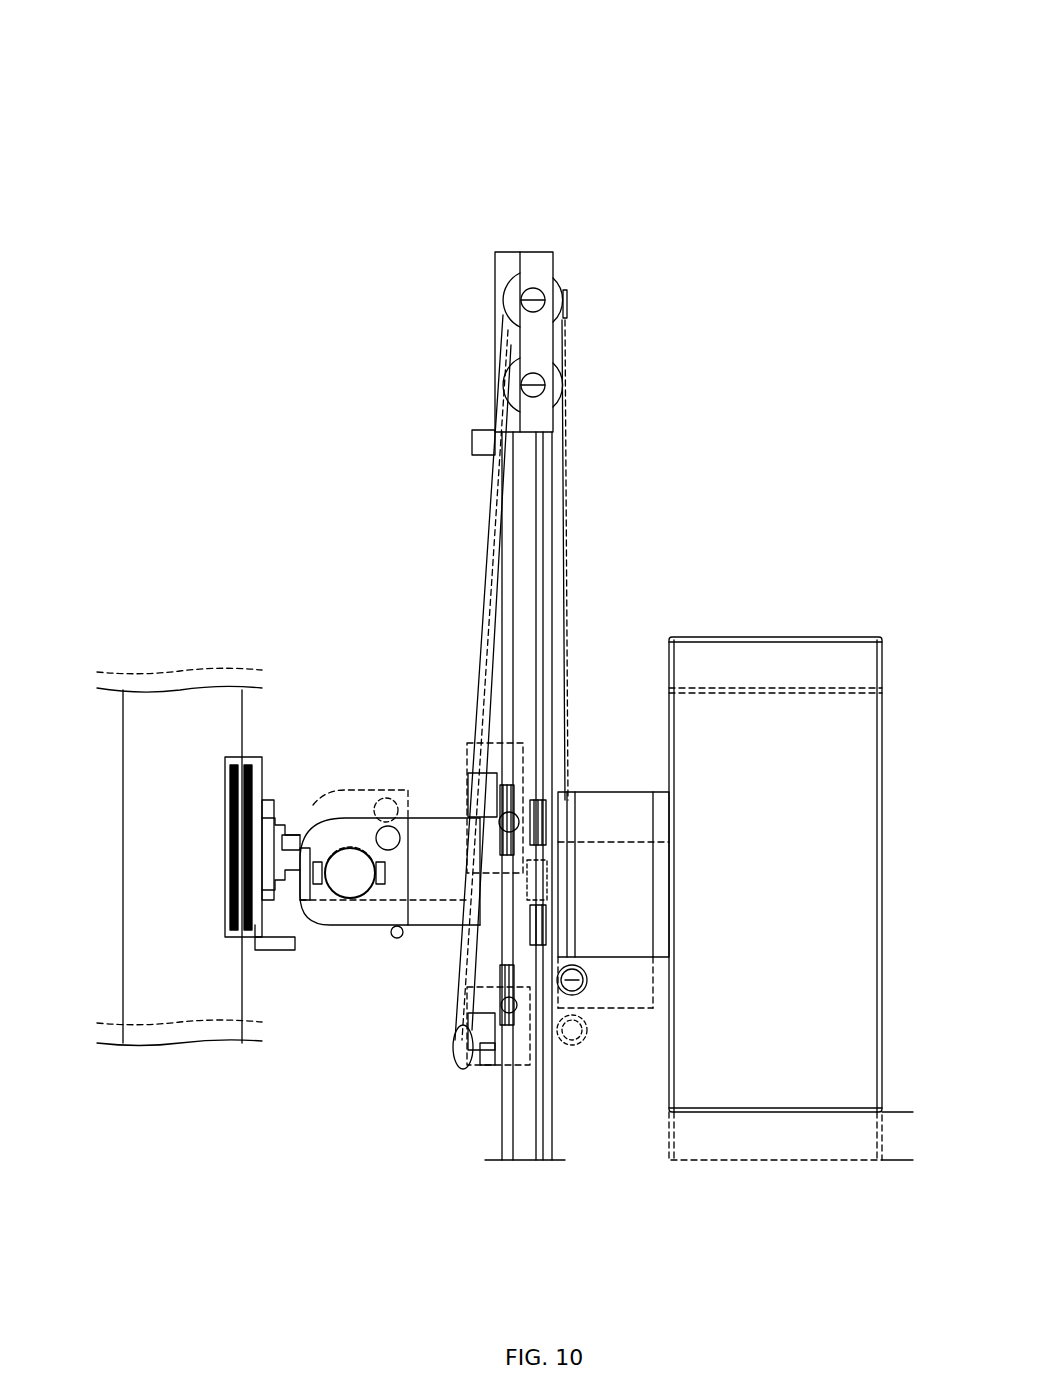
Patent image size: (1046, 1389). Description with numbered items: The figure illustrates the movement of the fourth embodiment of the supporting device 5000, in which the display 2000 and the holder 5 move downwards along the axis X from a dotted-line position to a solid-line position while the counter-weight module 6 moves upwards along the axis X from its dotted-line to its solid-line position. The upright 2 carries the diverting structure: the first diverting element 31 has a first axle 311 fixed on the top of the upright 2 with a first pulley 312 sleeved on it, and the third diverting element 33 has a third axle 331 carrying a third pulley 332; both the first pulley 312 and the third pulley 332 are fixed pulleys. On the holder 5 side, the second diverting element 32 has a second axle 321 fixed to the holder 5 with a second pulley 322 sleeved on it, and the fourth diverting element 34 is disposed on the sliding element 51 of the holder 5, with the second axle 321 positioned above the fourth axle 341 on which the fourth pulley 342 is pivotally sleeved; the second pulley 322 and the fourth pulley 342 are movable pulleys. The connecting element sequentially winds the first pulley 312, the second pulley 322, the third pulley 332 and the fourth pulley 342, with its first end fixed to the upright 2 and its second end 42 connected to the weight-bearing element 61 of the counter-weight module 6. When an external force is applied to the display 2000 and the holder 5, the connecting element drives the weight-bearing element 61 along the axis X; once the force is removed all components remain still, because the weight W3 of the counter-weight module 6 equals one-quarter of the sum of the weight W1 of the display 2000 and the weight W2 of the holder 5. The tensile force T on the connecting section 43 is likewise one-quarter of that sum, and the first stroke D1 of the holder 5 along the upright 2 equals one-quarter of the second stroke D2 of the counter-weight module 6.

The supporting device 5000 is at (413, 78).
The upright 2 is at (530, 258).
The first diverting element 31 is at (672, 272).
The first axle 311 is at (545, 302).
The first pulley 312 is at (566, 292).
The third diverting element 33 is at (665, 383).
The third axle 331 is at (545, 386).
The third pulley 332 is at (553, 396).
The connecting section 43 is at (568, 582).
The tensile force T is at (570, 626).
The second diverting element 32 is at (372, 798).
The second axle 321 is at (470, 790).
The second pulley 322 is at (472, 805).
The fourth diverting element 34 is at (385, 1140).
The fourth axle 341 is at (462, 1080).
The fourth pulley 342 is at (457, 1052).
The second end 42 is at (577, 792).
The holder 5 is at (317, 725).
The sliding element 51 is at (313, 805).
The display 2000 is at (195, 668).
The counter-weight module 6 is at (824, 584).
The weight-bearing element 61 is at (810, 642).
The axis X is at (768, 300).
The first stroke D1 is at (94, 688).
The second stroke D2 is at (905, 1118).
The weight of the display W1 is at (183, 1045).
The weight of the holder W2 is at (370, 935).
The weight of the counter-weight module W3 is at (770, 1112).